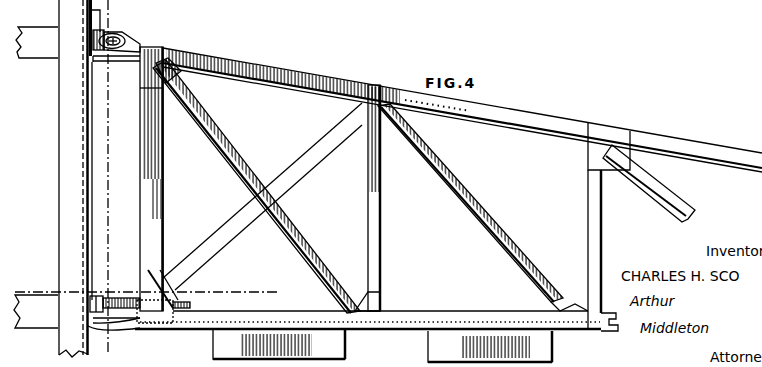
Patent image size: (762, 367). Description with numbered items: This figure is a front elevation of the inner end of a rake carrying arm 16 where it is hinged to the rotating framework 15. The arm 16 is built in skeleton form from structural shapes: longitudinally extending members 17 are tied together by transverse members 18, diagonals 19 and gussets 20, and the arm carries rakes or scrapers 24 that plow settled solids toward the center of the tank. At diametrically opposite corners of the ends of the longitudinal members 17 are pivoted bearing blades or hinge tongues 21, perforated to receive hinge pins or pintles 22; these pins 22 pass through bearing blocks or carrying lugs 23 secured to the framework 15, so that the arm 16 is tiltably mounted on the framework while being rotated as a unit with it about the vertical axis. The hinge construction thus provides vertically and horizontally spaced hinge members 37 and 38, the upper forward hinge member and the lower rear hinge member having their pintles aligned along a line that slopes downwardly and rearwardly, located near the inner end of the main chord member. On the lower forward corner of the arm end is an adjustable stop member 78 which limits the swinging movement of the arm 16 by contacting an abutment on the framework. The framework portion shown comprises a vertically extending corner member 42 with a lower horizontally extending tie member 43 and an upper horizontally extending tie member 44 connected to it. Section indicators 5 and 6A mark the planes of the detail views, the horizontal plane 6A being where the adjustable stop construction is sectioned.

The rotating framework 15 is at (38, 36).
The rake carrying arm 16 is at (449, 120).
The longitudinally extending member 17 is at (551, 125).
The transverse member 18 is at (163, 167).
The diagonal 19 is at (477, 196).
The gusset 20 is at (372, 292).
The hinge tongue 21 is at (158, 46).
The hinge pin 22 is at (113, 36).
The bearing block 23 is at (138, 47).
The rake 24 is at (336, 346).
The hinge member 37 is at (152, 332).
The hinge member 38 is at (108, 58).
The corner member 42 is at (60, 164).
The lower horizontally extending tie member 43 is at (43, 327).
The upper horizontally extending tie member 44 is at (42, 50).
The adjustable stop member 78 is at (116, 298).
The section line 5 is at (105, 340).
The section line 6A is at (28, 287).